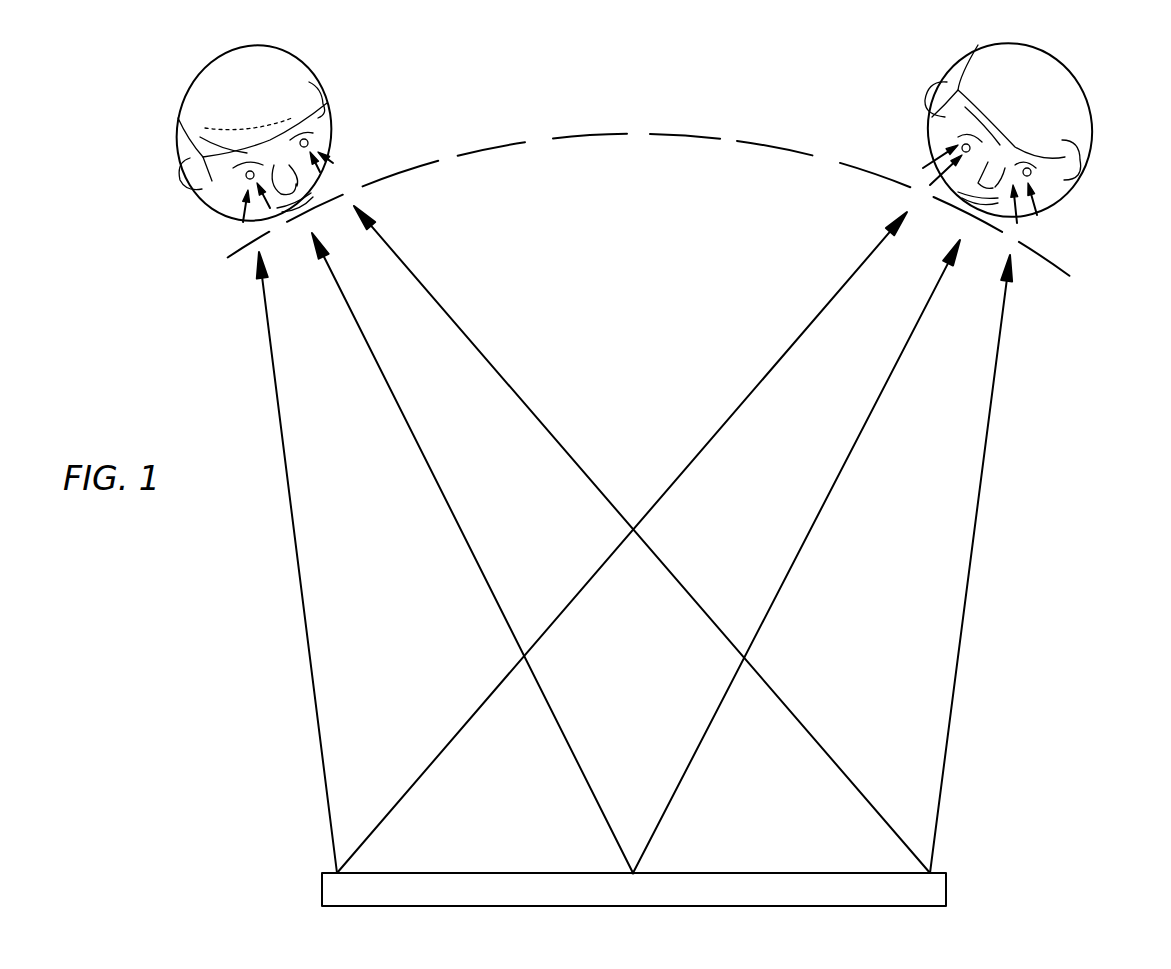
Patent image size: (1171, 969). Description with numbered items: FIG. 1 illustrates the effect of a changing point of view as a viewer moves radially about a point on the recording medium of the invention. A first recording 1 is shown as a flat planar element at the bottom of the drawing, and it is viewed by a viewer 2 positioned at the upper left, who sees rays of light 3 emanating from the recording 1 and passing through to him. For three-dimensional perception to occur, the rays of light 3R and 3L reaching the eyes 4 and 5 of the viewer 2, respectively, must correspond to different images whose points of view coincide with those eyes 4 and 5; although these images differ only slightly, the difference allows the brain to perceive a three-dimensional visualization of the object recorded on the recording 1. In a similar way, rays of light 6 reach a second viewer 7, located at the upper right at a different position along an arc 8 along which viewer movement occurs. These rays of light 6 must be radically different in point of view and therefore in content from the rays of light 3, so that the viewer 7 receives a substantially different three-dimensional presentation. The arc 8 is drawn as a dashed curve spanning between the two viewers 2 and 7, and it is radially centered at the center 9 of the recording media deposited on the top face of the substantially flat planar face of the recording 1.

The first recording 1 is at (819, 902).
The viewer 2 is at (274, 147).
The rays of light 3 is at (343, 302).
The ray of light 3L is at (328, 149).
The ray of light 3R is at (252, 198).
The eye 4 is at (250, 181).
The eye 5 is at (308, 140).
The rays of light 6 is at (920, 317).
The viewer 7 is at (1090, 127).
The arc 8 is at (593, 135).
The center 9 is at (633, 873).